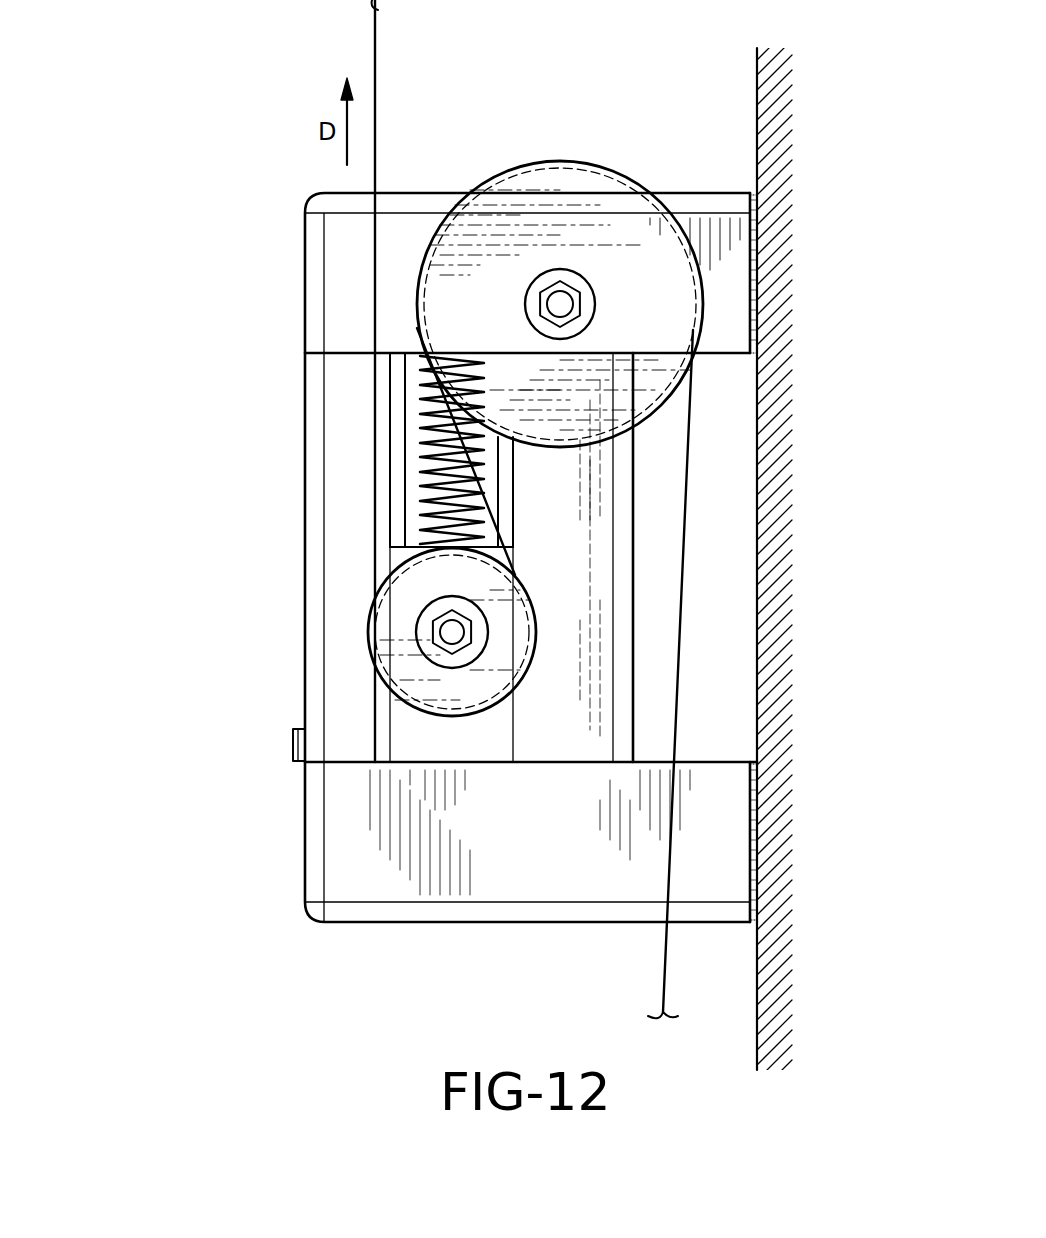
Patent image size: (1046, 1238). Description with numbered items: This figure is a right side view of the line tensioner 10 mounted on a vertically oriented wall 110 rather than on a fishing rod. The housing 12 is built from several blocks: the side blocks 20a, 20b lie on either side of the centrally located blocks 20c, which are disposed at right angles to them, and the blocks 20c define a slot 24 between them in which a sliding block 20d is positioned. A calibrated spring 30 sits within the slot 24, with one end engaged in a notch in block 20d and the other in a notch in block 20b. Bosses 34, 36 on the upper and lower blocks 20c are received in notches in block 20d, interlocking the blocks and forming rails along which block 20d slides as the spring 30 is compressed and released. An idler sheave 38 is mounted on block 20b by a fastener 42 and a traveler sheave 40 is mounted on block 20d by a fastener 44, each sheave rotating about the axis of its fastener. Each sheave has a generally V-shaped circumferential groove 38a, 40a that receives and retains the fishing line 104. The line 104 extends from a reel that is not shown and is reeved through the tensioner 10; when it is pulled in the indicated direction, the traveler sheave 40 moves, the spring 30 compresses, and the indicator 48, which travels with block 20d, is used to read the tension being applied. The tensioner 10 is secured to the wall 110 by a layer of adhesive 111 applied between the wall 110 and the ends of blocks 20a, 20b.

The line tensioner 10 is at (272, 324).
The housing 12 is at (305, 573).
The block 20a is at (448, 922).
The block 20b is at (428, 196).
The block 20c is at (305, 488).
The block 20d is at (493, 762).
The slot 24 is at (410, 440).
The spring 30 is at (412, 512).
The boss 34 is at (402, 388).
The boss 36 is at (508, 522).
The idler sheave 38 is at (560, 243).
The circumferential groove 38a is at (518, 188).
The traveler sheave 40 is at (401, 632).
The circumferential groove 40a is at (372, 662).
The fastener 42 is at (563, 296).
The fastener 44 is at (455, 633).
The indicator 48 is at (293, 738).
The fishing line 104 is at (373, 30).
The wall 110 is at (757, 94).
The layer of adhesive 111 is at (750, 324).